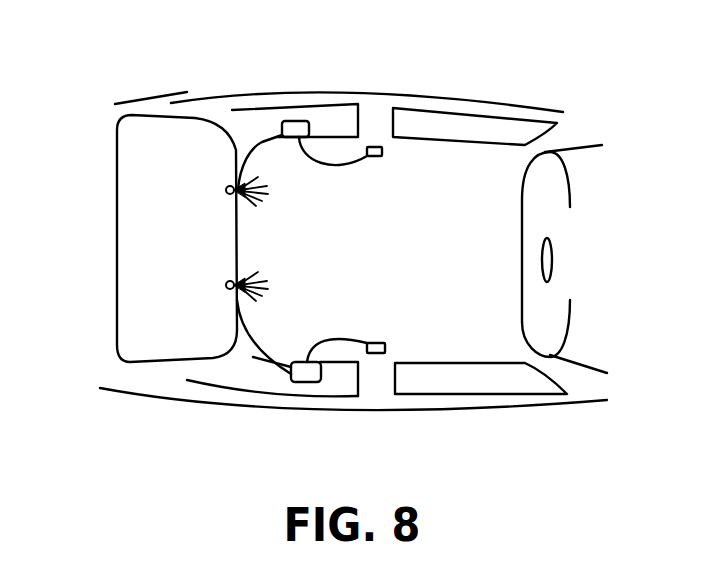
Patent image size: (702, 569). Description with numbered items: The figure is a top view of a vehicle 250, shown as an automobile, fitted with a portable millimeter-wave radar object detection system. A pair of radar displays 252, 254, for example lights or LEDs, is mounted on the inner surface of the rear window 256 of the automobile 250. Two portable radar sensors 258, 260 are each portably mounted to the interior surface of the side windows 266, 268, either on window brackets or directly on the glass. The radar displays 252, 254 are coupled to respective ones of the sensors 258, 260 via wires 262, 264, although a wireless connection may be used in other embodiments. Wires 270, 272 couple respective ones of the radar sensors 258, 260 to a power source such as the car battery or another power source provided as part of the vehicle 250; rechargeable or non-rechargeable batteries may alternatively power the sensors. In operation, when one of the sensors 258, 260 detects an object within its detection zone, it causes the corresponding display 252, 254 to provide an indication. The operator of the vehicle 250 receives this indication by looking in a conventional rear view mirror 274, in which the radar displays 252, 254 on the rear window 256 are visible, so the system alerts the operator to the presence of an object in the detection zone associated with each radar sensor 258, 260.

The vehicle 250 is at (358, 263).
The radar display 252 is at (226, 285).
The radar display 254 is at (226, 190).
The rear window 256 is at (117, 233).
The radar sensor 258 is at (302, 383).
The radar sensor 260 is at (295, 120).
The wire 262 is at (251, 338).
The wire 264 is at (251, 150).
The side window 266 is at (357, 383).
The side window 268 is at (343, 121).
The wire 270 is at (377, 342).
The wire 272 is at (375, 157).
The rear view mirror 274 is at (542, 258).